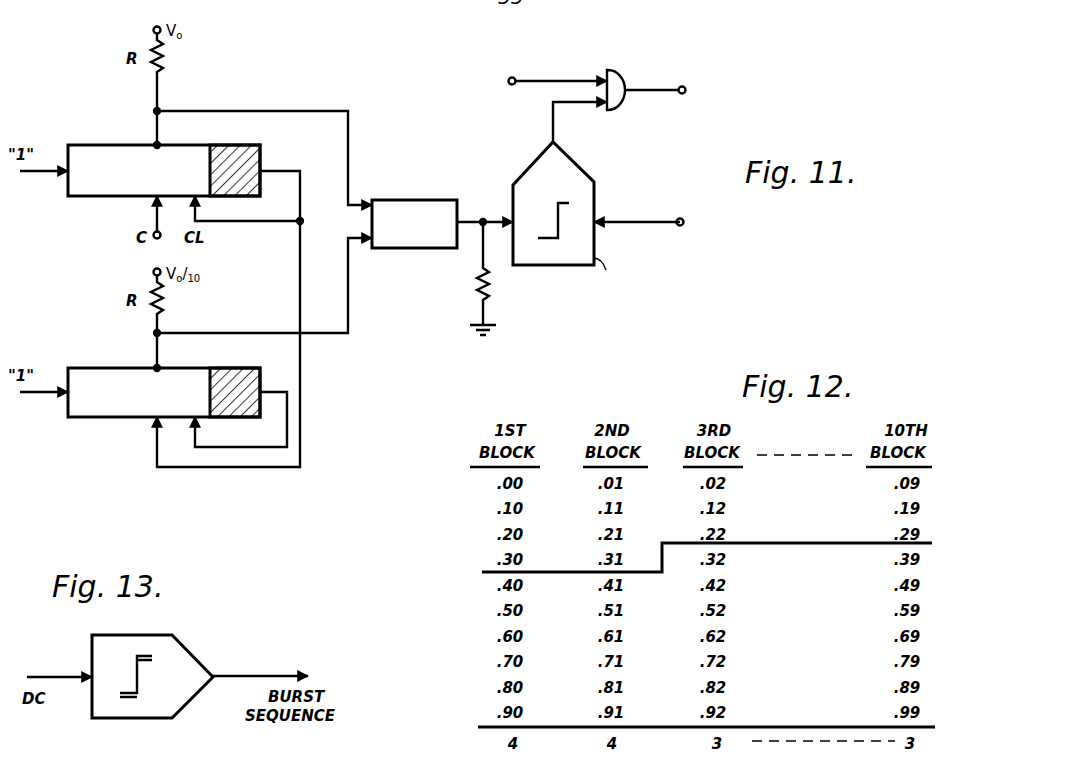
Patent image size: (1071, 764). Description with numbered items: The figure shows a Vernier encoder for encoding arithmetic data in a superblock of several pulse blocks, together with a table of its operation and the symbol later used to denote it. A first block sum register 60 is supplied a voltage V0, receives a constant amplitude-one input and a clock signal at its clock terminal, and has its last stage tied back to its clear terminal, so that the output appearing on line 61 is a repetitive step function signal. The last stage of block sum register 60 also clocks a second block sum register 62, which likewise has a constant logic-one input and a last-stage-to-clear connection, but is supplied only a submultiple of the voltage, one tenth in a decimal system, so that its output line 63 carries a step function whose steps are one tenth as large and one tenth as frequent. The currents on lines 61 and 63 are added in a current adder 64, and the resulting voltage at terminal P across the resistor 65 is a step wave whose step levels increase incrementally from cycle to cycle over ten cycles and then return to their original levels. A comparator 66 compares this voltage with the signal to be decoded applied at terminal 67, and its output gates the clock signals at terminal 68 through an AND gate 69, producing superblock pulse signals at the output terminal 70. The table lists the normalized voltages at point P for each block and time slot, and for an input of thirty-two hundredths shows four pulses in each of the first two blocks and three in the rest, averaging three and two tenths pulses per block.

The first block sum register 60 is at (90, 198).
The output line of first block sum register 61 is at (288, 110).
The second block sum register 62 is at (100, 418).
The output line of second block sum register 63 is at (240, 333).
The current adder 64 is at (415, 198).
The resistor 65 is at (492, 290).
The comparator 66 is at (580, 163).
The input terminal 67 is at (684, 222).
The clock terminal 68 is at (556, 81).
The AND gate 69 is at (614, 70).
The output terminal 70 is at (686, 87).